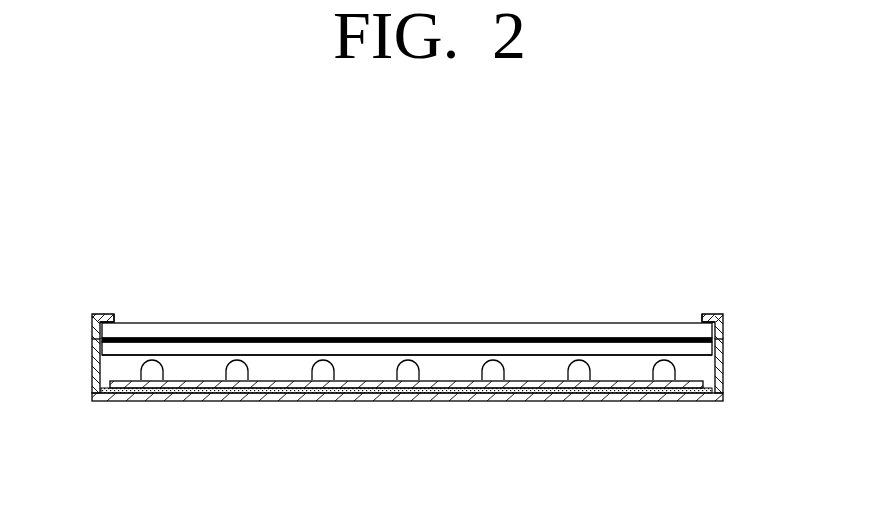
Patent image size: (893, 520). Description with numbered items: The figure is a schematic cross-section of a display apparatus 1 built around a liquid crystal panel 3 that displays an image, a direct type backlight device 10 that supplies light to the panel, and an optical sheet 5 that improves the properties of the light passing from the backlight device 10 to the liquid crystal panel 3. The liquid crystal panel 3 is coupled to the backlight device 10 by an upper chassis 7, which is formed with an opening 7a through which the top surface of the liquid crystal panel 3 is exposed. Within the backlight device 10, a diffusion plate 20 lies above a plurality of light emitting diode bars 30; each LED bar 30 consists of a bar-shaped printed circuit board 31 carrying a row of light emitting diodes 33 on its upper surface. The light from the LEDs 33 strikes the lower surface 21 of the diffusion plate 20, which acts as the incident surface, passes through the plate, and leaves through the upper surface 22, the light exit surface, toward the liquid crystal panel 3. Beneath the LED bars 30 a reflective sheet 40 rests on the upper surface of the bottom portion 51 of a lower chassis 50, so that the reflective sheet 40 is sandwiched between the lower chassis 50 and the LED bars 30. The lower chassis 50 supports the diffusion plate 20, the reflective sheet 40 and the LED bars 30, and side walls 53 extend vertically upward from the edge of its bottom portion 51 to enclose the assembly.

The display apparatus 1 is at (483, 290).
The liquid crystal panel 3 is at (250, 330).
The optical sheet 5 is at (203, 339).
The upper chassis 7 is at (100, 315).
The opening 7a is at (114, 320).
The direct type backlight device 10 is at (183, 406).
The diffusion plate 20 is at (705, 347).
The lower surface 21 is at (280, 356).
The upper surface 22 is at (282, 348).
The light emitting diode bar 30 is at (703, 377).
The printed circuit board 31 is at (550, 385).
The light emitting diodes 33 is at (485, 370).
The reflective sheet 40 is at (712, 389).
The lower chassis 50 is at (690, 397).
The bottom portion 51 is at (355, 398).
The side walls 53 is at (97, 383).